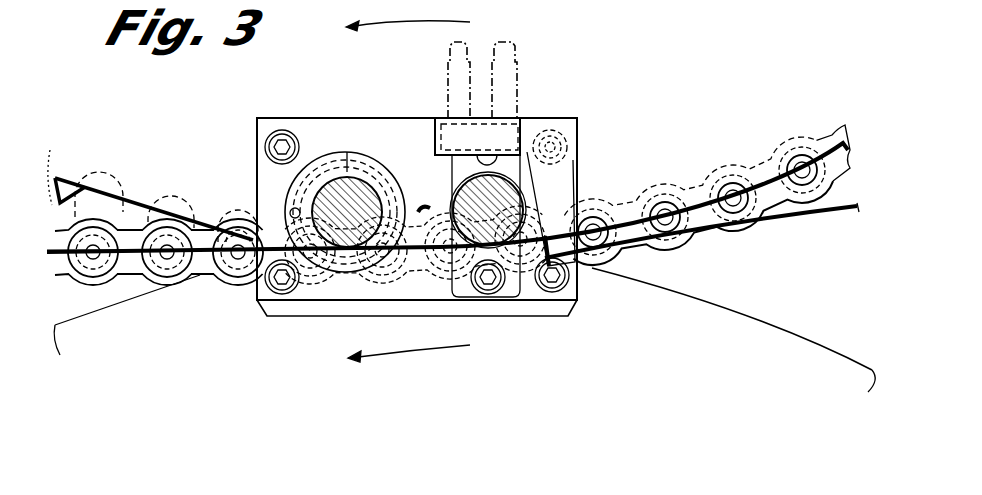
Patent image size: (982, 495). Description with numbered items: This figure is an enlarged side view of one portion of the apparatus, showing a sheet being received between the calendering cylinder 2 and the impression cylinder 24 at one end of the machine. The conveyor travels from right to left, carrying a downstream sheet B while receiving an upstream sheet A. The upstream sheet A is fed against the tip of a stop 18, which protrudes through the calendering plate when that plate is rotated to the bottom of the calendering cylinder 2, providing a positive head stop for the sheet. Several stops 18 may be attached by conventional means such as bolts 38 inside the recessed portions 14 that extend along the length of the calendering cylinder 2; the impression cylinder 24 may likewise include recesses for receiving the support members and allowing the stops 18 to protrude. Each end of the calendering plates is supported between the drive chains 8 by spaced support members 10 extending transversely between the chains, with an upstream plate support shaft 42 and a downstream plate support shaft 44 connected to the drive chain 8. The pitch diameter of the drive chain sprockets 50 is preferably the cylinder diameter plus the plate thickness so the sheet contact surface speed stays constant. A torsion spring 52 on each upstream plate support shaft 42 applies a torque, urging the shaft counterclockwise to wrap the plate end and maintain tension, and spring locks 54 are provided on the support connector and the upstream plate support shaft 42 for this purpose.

The calendering cylinder 2 is at (140, 142).
The drive chain 8 is at (742, 165).
The support member 10 is at (315, 132).
The recessed portion 14 is at (343, 123).
The stop 18 is at (593, 268).
The impression cylinder 24 is at (757, 345).
The bolt 38 is at (503, 80).
The upstream plate support shaft 42 is at (313, 200).
The downstream plate support shaft 44 is at (523, 192).
The drive chain sprocket 50 is at (172, 196).
The torsion spring 52 is at (412, 210).
The spring lock 54 is at (330, 267).
The upstream sheet A is at (773, 225).
The downstream sheet B is at (106, 262).